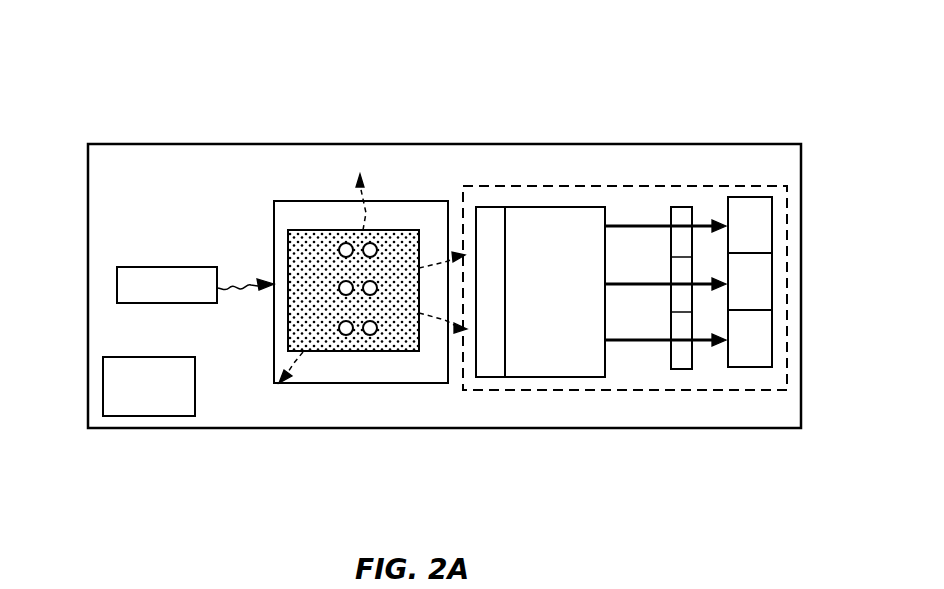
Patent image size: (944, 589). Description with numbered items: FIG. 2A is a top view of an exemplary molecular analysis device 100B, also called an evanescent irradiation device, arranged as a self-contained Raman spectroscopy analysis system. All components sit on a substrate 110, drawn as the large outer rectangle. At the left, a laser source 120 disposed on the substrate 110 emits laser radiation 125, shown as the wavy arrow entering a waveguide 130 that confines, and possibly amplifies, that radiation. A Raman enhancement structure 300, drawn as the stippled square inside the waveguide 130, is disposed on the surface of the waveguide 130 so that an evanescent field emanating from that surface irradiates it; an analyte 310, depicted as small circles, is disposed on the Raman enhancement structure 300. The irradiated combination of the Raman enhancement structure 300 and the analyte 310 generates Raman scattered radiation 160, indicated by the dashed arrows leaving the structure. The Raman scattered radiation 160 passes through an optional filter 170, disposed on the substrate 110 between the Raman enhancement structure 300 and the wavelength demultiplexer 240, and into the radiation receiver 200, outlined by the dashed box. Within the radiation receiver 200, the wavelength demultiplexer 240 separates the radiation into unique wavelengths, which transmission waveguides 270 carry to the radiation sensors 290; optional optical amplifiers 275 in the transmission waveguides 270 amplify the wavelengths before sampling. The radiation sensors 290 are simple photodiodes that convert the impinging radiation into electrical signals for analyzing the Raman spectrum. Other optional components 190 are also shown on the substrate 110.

The molecular analysis device 100B is at (165, 62).
The substrate 110 is at (230, 430).
The laser source 120 is at (117, 285).
The laser radiation 125 is at (268, 282).
The waveguide 130 is at (322, 201).
The Raman scattered radiation 160 is at (427, 262).
The filter 170 is at (490, 377).
The other optional components 190 is at (103, 388).
The radiation receiver 200 is at (755, 185).
The wavelength demultiplexer 240 is at (562, 207).
The transmission waveguides 270 is at (648, 337).
The optical amplifiers 275 is at (692, 207).
The radiation sensors 290 is at (772, 234).
The Raman enhancement structure 300 is at (333, 351).
The analyte 310 is at (348, 334).